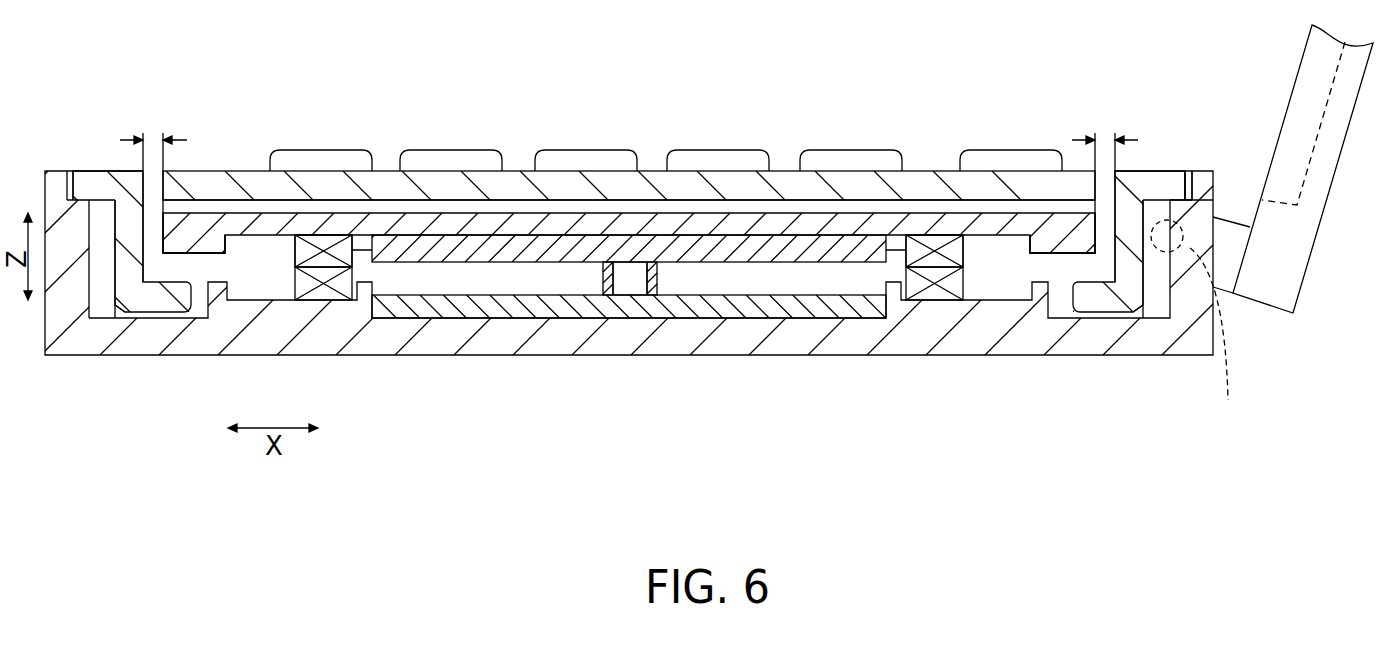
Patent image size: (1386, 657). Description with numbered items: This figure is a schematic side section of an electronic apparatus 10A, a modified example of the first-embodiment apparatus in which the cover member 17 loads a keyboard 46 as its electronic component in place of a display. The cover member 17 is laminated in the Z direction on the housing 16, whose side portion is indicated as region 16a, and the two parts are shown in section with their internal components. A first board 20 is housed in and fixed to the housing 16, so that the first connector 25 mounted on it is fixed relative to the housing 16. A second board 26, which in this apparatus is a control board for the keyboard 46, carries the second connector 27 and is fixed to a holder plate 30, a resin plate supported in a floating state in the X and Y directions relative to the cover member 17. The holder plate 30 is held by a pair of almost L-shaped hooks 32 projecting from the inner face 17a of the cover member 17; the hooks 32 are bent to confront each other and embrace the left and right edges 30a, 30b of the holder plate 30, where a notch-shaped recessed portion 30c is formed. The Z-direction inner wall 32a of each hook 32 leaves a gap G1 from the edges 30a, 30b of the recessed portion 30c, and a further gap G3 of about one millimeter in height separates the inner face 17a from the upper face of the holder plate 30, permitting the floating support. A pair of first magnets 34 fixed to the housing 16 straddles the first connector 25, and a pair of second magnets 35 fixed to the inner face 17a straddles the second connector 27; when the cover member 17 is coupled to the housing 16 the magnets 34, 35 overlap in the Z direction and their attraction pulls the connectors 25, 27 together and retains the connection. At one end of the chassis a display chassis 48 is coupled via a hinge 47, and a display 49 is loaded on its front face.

The electronic apparatus 10A is at (91, 92).
The housing 16 is at (428, 358).
The side wall of housing 16a is at (1187, 171).
The cover member 17 is at (218, 167).
The inner face of the cover member 17a is at (394, 204).
The first board 20 is at (515, 305).
The first connector 25 is at (652, 292).
The second board 26 is at (512, 244).
The second connector 27 is at (633, 272).
The holder plate 30 is at (767, 226).
The left edge of the holder plate 30a is at (160, 243).
The right edge of the holder plate 30b is at (1072, 292).
The recessed portion 30c is at (629, 233).
The hook 32 is at (174, 300).
The inner wall of the hook 32a is at (118, 298).
The first magnet 34 is at (323, 292).
The second magnet 35 is at (323, 250).
The keyboard 46 is at (717, 108).
The hinge 47 is at (1198, 326).
The display chassis 48 is at (1310, 289).
The display 49 is at (1306, 58).
The gap G1 is at (629, 194).
The gap G3 is at (831, 206).